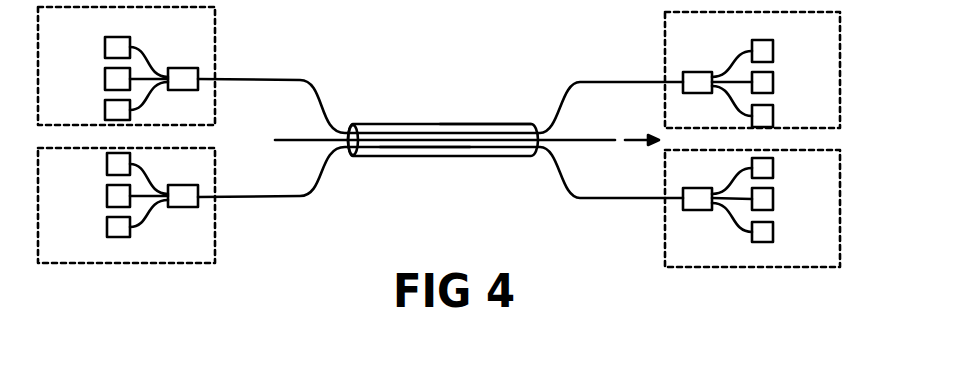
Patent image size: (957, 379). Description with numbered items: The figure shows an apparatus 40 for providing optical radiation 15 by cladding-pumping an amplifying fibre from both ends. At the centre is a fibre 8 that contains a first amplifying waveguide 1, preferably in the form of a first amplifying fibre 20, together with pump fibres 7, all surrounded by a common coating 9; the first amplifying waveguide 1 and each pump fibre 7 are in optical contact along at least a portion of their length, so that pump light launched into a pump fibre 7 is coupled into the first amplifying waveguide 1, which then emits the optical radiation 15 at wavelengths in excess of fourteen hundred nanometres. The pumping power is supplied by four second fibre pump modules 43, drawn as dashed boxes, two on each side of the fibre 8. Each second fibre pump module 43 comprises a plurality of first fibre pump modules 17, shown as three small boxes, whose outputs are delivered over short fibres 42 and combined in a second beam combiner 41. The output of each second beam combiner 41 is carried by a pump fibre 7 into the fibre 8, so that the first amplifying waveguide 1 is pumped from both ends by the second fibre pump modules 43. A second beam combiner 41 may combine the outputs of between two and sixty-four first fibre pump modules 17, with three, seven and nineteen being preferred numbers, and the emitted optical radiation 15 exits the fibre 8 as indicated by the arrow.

The first amplifying waveguide 1 is at (460, 138).
The pump fibre 7 is at (320, 112).
The fibre 8 is at (402, 125).
The common coating 9 is at (507, 125).
The optical radiation 15 is at (641, 141).
The first fibre pump module 17 is at (103, 45).
The first amplifying fibre 20 is at (437, 143).
The apparatus 40 is at (264, 301).
The second beam combiner 41 is at (178, 68).
The optical fibers 42 is at (145, 217).
The second fibre pump module 43 is at (217, 38).